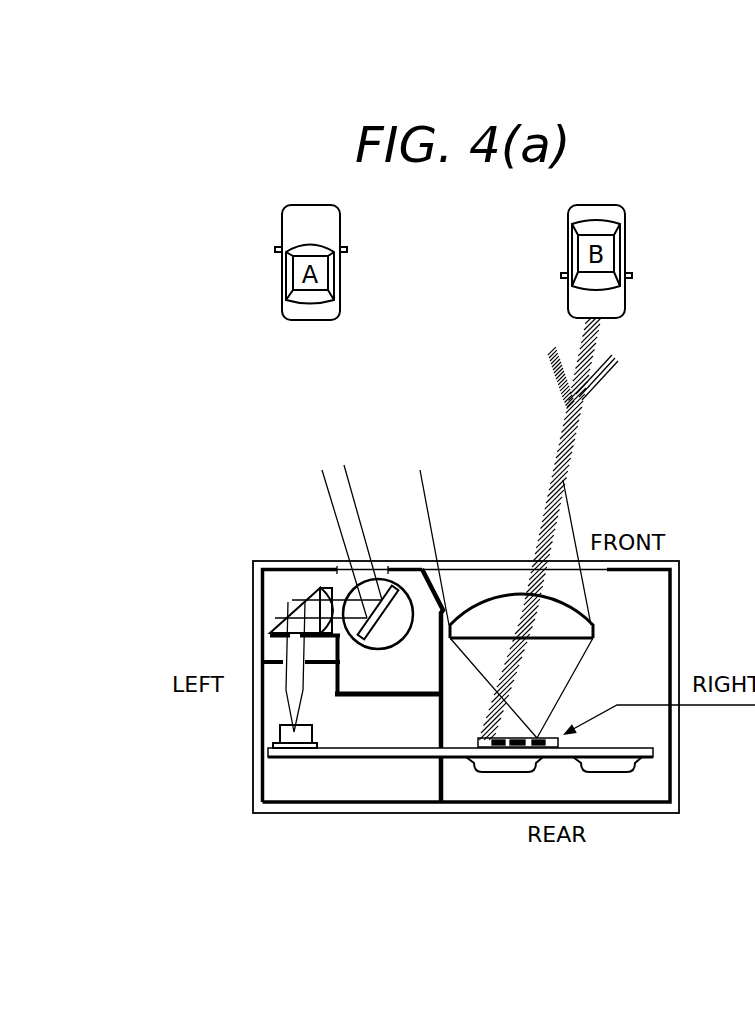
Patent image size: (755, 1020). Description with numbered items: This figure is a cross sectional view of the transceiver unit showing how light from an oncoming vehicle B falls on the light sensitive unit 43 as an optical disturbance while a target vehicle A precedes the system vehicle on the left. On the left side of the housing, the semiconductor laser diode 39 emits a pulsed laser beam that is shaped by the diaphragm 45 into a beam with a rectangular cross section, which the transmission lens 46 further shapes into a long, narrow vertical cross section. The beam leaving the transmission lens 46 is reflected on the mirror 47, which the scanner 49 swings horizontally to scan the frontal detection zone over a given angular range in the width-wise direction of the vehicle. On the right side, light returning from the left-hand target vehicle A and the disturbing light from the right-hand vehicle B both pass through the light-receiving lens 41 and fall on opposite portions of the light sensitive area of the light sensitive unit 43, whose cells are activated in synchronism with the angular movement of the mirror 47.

The semiconductor laser diode 39 is at (313, 733).
The light-receiving lens 41 is at (572, 602).
The light sensitive unit 43 is at (548, 735).
The diaphragm 45 is at (271, 640).
The transmission lens 46 is at (319, 586).
The mirror 47 is at (373, 640).
The scanner 49 is at (397, 648).